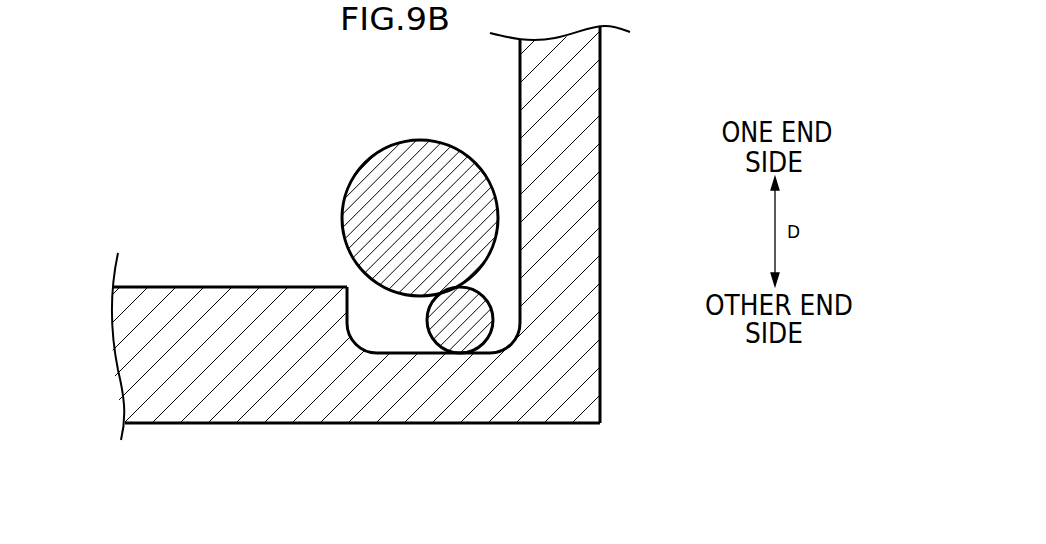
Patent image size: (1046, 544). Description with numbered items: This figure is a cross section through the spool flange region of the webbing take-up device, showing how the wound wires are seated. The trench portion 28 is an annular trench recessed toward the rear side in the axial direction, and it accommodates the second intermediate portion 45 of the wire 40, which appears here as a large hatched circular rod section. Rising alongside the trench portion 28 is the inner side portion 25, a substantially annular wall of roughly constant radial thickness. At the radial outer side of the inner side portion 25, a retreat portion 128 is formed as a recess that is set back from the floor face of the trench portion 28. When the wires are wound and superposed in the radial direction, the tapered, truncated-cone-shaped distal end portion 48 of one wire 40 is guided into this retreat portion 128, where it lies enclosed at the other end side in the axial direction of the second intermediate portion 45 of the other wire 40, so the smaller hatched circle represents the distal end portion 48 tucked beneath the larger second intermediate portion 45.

The inner side portion 25 is at (588, 142).
The trench portion 28 is at (183, 297).
The wire 40 is at (418, 141).
The second intermediate portion 45 is at (380, 176).
The distal end portion 48 is at (459, 335).
The retreat portion 128 is at (358, 283).